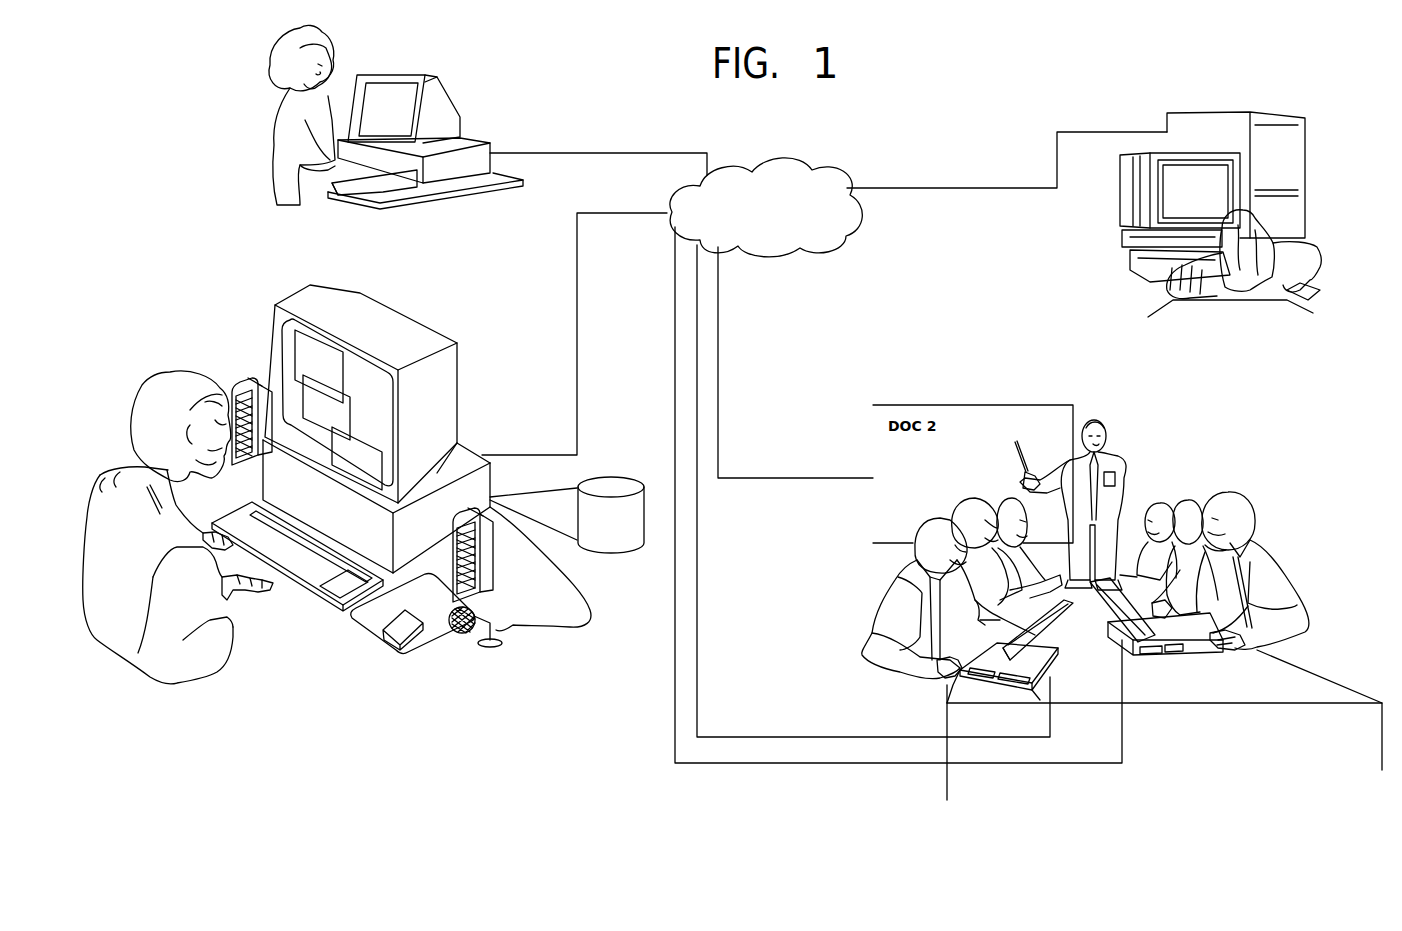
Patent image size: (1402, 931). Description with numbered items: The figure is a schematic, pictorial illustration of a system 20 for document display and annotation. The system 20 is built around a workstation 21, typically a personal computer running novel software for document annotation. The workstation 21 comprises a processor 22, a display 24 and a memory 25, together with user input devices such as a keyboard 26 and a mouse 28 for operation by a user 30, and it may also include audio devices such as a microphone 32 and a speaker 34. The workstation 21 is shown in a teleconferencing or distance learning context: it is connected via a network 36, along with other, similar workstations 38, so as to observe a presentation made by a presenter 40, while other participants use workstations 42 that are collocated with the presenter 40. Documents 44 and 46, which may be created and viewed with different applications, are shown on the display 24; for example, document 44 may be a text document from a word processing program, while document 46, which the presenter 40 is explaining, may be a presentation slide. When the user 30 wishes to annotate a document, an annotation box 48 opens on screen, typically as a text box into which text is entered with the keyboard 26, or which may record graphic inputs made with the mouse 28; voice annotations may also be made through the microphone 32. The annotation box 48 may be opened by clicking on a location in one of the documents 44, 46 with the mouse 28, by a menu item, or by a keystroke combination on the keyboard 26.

The system 20 is at (146, 145).
The workstation 21 is at (205, 322).
The processor 22 is at (463, 457).
The display 24 is at (385, 394).
The memory 25 is at (612, 483).
The keyboard 26 is at (333, 610).
The mouse 28 is at (384, 648).
The user 30 is at (145, 408).
The microphone 32 is at (462, 635).
The speaker 34 is at (257, 380).
The network 36 is at (807, 188).
The workstations 38 is at (477, 147).
The presenter 40 is at (1095, 420).
The workstations 42 is at (1063, 672).
The document 44 is at (345, 365).
The document 46 is at (352, 405).
The annotation box 48 is at (335, 466).